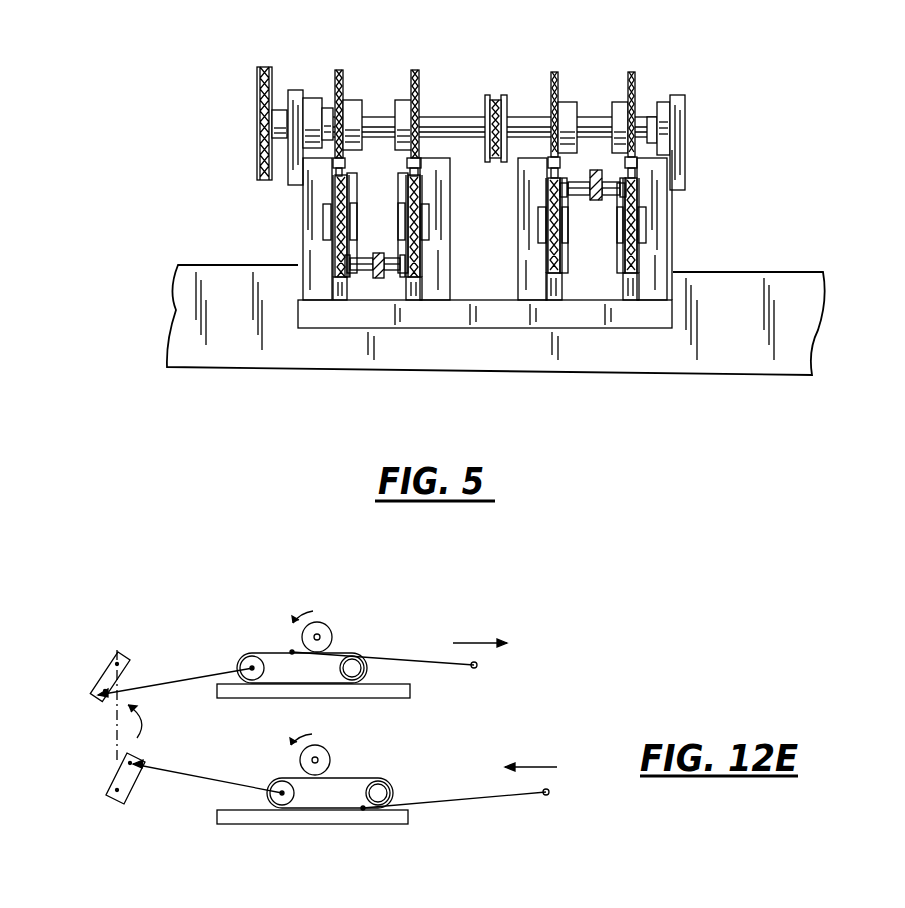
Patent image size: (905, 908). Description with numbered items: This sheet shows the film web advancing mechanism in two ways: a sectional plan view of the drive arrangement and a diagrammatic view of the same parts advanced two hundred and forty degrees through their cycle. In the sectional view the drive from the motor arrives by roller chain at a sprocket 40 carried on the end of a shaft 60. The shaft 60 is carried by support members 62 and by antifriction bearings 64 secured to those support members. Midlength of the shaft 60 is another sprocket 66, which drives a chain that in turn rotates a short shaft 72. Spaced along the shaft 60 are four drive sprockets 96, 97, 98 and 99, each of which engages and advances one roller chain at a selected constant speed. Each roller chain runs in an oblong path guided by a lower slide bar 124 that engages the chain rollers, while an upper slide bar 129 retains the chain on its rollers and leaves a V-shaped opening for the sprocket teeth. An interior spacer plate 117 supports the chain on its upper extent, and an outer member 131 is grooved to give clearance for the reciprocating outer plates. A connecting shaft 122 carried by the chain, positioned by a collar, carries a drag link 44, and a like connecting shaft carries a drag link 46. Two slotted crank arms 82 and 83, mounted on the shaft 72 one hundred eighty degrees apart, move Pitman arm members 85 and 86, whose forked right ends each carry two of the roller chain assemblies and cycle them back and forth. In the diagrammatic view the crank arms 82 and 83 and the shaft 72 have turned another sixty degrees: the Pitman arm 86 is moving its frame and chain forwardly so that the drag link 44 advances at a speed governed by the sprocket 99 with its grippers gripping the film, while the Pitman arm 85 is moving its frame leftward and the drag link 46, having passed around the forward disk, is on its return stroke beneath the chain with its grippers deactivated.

In FIG. 5, the sprocket 40 is at (278, 108).
In FIG. 5, the sprocket 96 is at (340, 70).
In FIG. 5, the sprocket 97 is at (415, 70).
In FIG. 12E, the sprocket 97 is at (325, 758).
In FIG. 5, the sprocket 98 is at (555, 72).
In FIG. 5, the sprocket 99 is at (632, 72).
In FIG. 12E, the sprocket 99 is at (325, 631).
In FIG. 5, the shaft 60 is at (445, 120).
In FIG. 5, the sprocket 66 is at (498, 100).
In FIG. 5, the support members 62 is at (680, 100).
In FIG. 5, the antifriction bearings 64 is at (663, 123).
In FIG. 5, the upper slide bar 129 is at (408, 170).
In FIG. 5, the drag link 44 is at (597, 200).
In FIG. 12E, the drag link 44 is at (402, 660).
In FIG. 5, the drag link 46 is at (380, 278).
In FIG. 12E, the drag link 46 is at (445, 802).
In FIG. 5, the connecting shaft 122 is at (365, 268).
In FIG. 5, the interior spacer plate 117 is at (418, 290).
In FIG. 5, the outer member 131 is at (652, 288).
In FIG. 12E, the slotted crank arm 83 is at (105, 672).
In FIG. 12E, the slotted crank arm 82 is at (133, 780).
In FIG. 12E, the Pitman arm member 86 is at (180, 678).
In FIG. 12E, the Pitman arm member 85 is at (192, 778).
In FIG. 12E, the short shaft 72 is at (115, 735).
In FIG. 12E, the lower slide bar 124 is at (390, 690).